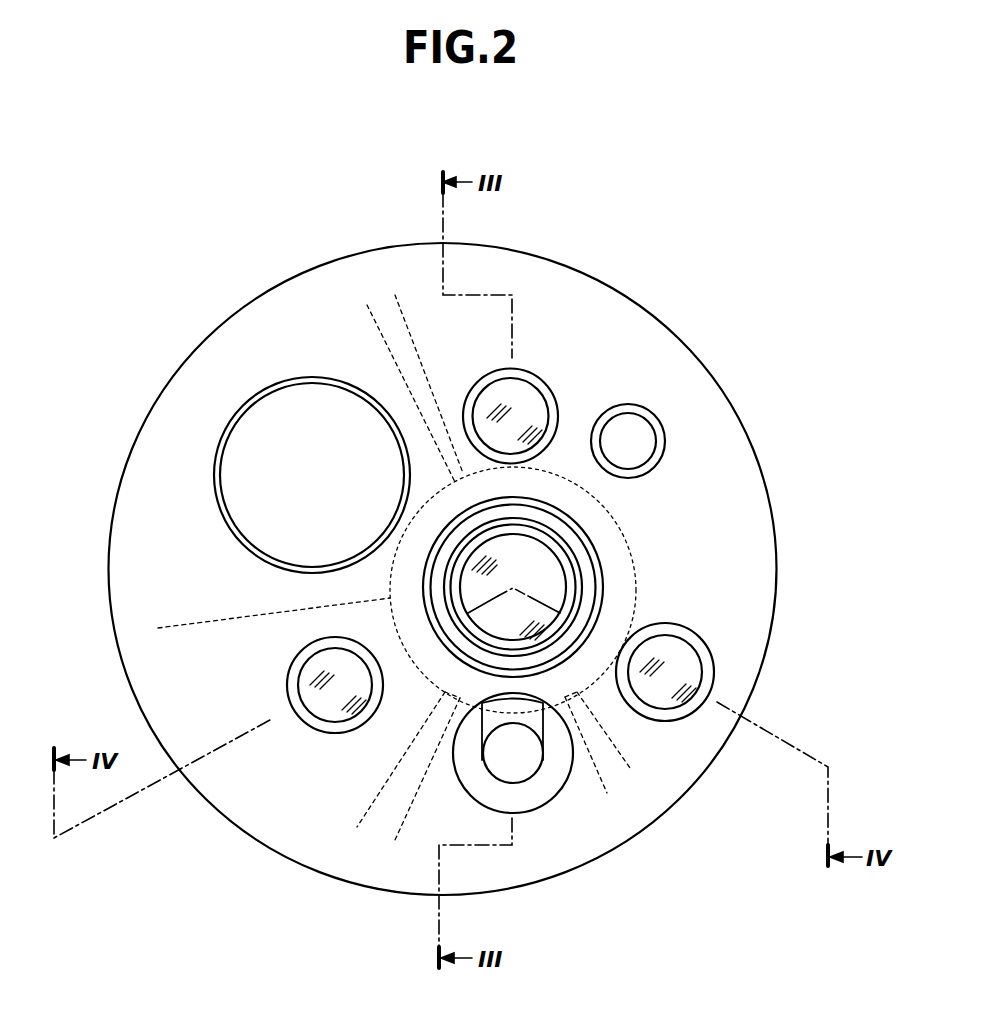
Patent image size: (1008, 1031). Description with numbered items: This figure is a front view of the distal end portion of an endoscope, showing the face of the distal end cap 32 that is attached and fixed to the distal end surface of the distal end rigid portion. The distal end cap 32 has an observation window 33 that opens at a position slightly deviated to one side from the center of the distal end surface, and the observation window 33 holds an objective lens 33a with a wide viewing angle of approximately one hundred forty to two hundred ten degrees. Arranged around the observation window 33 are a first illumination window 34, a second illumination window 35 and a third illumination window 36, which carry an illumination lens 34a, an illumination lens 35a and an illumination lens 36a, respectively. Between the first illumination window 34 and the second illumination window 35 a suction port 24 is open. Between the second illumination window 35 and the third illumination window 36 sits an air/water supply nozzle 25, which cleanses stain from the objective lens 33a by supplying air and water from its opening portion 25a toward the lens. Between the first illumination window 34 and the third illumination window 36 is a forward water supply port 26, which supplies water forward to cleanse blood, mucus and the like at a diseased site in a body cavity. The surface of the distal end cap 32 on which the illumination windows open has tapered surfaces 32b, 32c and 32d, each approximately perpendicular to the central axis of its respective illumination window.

The suction port 24 is at (260, 528).
The air/water supply nozzle 25 is at (557, 805).
The opening portion 25a is at (512, 698).
The forward water supply port 26 is at (637, 445).
The distal end cap 32 is at (682, 342).
The tapered surface 32b is at (538, 350).
The tapered surface 32c is at (290, 735).
The tapered surface 32d is at (722, 683).
The observation window 33 is at (598, 553).
The objective lens 33a is at (548, 581).
The first illumination window 34 is at (547, 382).
The illumination lens 34a is at (498, 395).
The second illumination window 35 is at (333, 733).
The illumination lens 35a is at (307, 697).
The third illumination window 36 is at (668, 721).
The illumination lens 36a is at (683, 653).